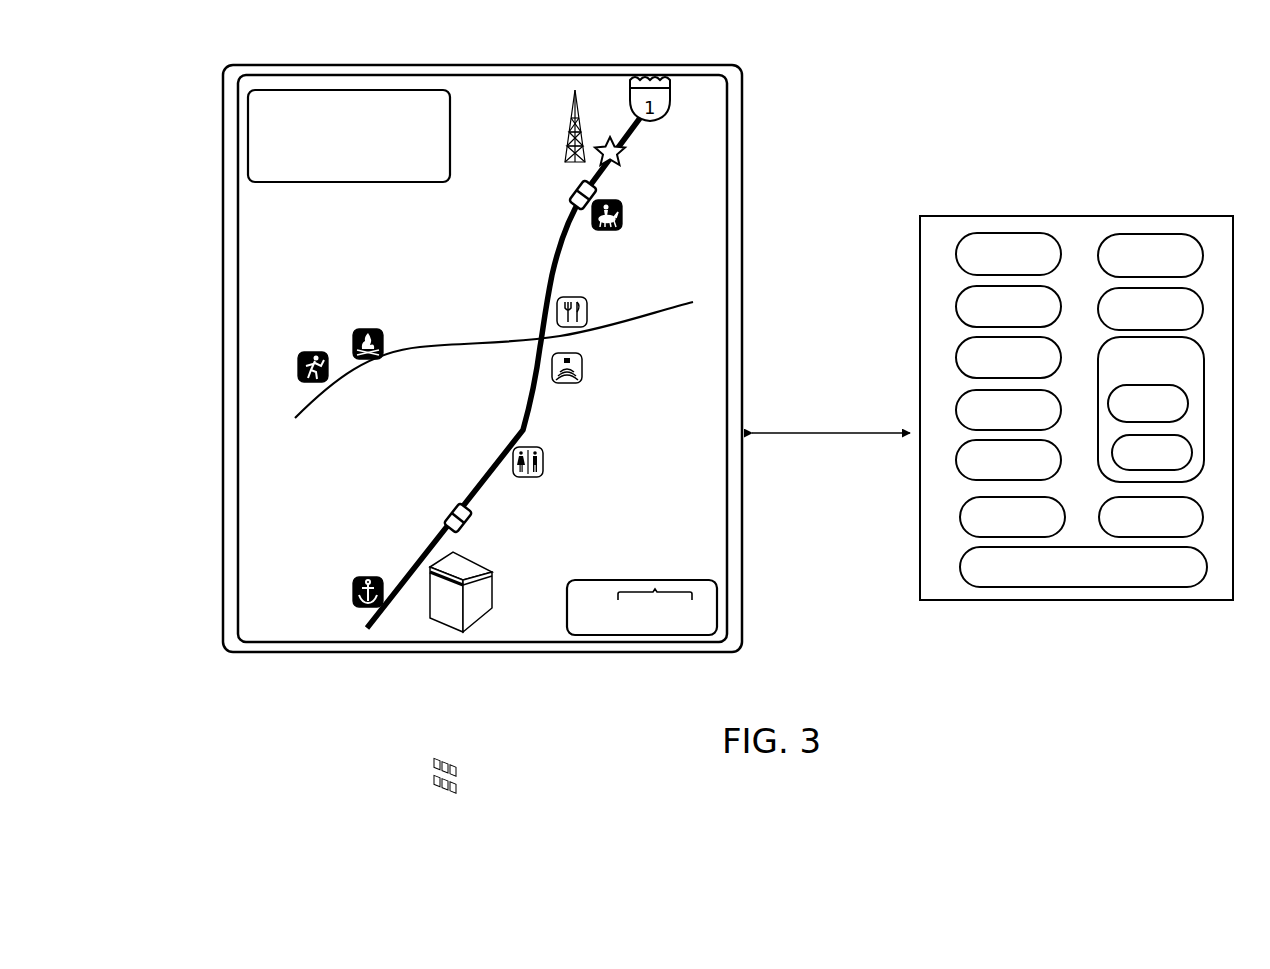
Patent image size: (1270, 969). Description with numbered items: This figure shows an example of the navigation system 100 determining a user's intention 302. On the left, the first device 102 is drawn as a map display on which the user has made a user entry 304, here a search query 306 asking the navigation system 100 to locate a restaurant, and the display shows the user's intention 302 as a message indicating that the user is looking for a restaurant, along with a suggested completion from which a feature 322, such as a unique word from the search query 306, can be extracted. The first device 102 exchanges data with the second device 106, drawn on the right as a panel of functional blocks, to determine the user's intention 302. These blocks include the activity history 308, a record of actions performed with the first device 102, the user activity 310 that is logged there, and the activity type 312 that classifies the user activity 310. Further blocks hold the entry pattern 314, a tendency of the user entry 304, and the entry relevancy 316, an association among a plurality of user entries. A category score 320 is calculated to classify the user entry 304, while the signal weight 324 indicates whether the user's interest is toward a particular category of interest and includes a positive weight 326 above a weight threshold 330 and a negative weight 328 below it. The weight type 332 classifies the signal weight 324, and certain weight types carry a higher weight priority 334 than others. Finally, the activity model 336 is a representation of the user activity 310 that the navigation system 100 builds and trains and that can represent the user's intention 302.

The navigation system 100 is at (318, 38).
The first device 102 is at (667, 60).
The second device 106 is at (1109, 208).
The user's intention 302 is at (267, 102).
The user entry 304 is at (558, 610).
The search query 306 is at (708, 603).
The activity history 308 is at (1032, 266).
The user activity 310 is at (1032, 318).
The activity type 312 is at (1032, 370).
The entry pattern 314 is at (1032, 422).
The entry relevancy 316 is at (1032, 472).
The category score 320 is at (1174, 267).
The feature 322 is at (655, 589).
The signal weight 324 is at (1174, 365).
The positive weight 326 is at (1173, 415).
The negative weight 328 is at (1176, 464).
The weight threshold 330 is at (1174, 321).
The weight type 332 is at (1036, 529).
The weight priority 334 is at (1174, 529).
The activity model 336 is at (1107, 579).